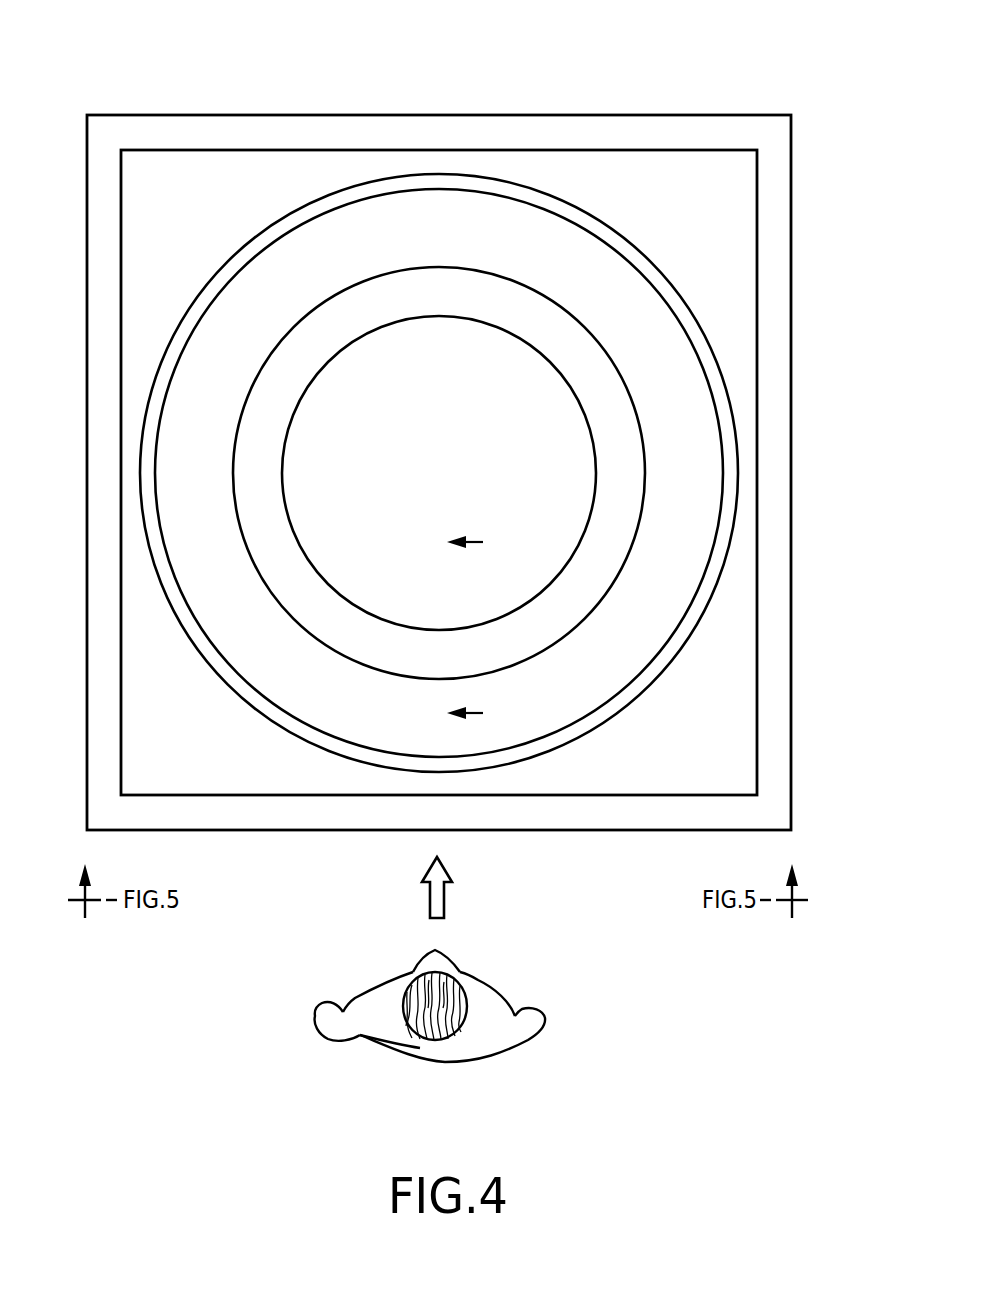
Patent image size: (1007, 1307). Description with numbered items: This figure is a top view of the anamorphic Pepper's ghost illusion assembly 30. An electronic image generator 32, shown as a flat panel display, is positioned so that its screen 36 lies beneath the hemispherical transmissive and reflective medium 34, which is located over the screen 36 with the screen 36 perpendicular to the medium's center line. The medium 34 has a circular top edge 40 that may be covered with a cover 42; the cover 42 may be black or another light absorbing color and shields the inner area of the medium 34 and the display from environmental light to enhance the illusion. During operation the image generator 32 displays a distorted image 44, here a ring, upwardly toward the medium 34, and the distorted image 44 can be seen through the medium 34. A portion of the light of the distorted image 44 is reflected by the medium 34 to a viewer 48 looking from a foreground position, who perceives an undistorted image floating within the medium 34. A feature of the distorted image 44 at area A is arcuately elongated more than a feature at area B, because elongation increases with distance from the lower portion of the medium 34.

The anamorphic Pepper's ghost illusion assembly 30 is at (52, 75).
The electronic image generator 32 is at (792, 410).
The hemispherical transmissive and reflective medium 34 is at (268, 268).
The screen 36 is at (718, 150).
The circular top edge 40 is at (662, 291).
The cover 42 is at (628, 241).
The distorted image 44 is at (546, 297).
The viewer 48 is at (514, 1047).